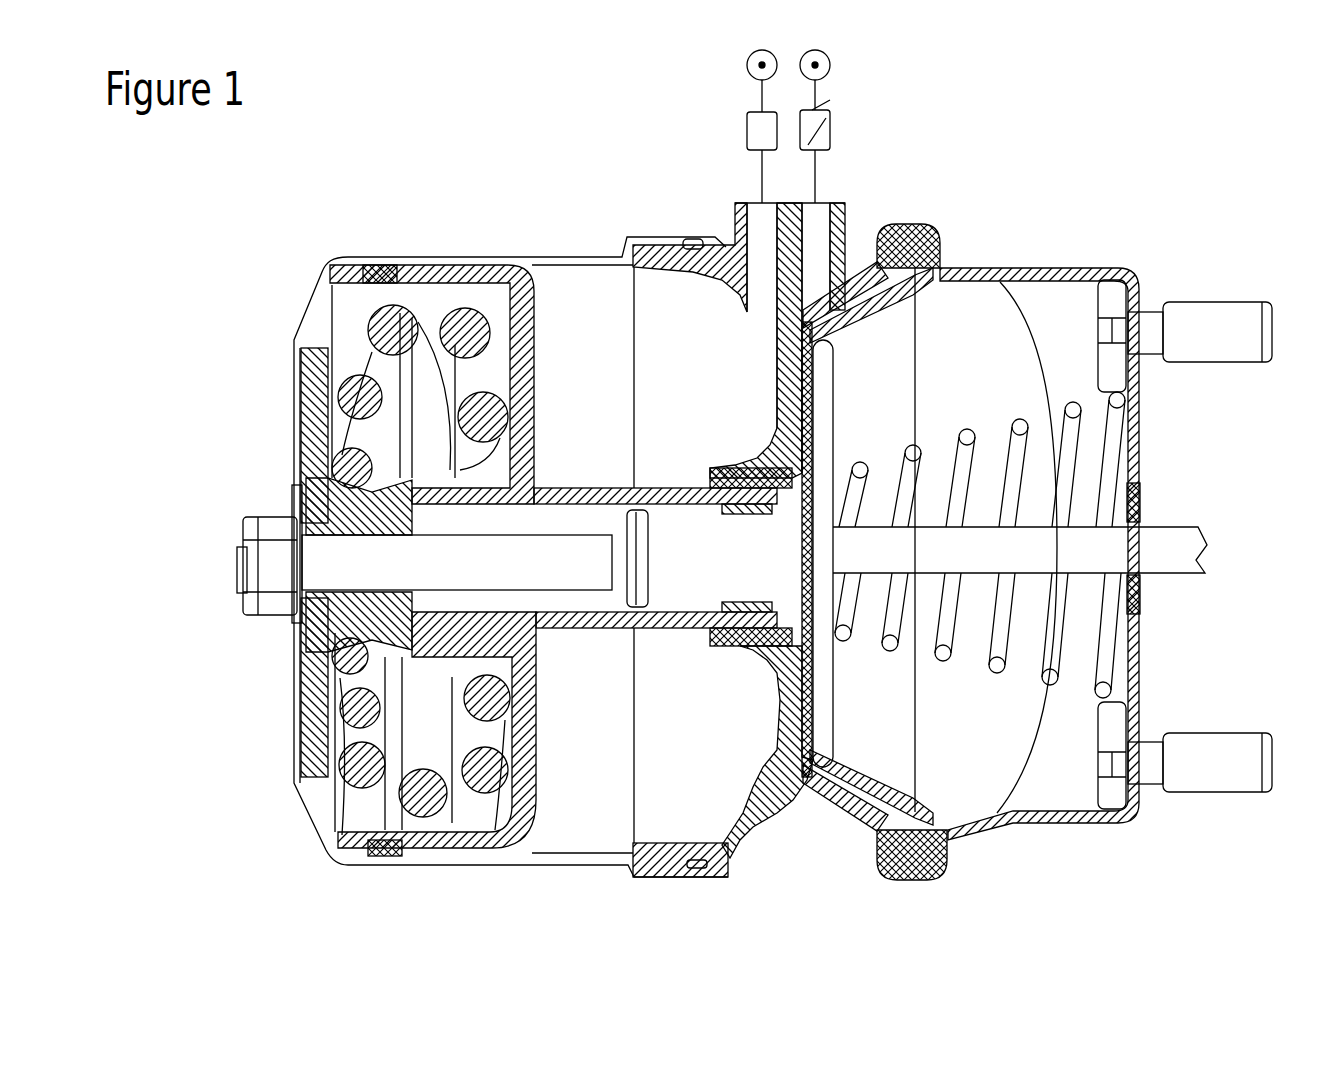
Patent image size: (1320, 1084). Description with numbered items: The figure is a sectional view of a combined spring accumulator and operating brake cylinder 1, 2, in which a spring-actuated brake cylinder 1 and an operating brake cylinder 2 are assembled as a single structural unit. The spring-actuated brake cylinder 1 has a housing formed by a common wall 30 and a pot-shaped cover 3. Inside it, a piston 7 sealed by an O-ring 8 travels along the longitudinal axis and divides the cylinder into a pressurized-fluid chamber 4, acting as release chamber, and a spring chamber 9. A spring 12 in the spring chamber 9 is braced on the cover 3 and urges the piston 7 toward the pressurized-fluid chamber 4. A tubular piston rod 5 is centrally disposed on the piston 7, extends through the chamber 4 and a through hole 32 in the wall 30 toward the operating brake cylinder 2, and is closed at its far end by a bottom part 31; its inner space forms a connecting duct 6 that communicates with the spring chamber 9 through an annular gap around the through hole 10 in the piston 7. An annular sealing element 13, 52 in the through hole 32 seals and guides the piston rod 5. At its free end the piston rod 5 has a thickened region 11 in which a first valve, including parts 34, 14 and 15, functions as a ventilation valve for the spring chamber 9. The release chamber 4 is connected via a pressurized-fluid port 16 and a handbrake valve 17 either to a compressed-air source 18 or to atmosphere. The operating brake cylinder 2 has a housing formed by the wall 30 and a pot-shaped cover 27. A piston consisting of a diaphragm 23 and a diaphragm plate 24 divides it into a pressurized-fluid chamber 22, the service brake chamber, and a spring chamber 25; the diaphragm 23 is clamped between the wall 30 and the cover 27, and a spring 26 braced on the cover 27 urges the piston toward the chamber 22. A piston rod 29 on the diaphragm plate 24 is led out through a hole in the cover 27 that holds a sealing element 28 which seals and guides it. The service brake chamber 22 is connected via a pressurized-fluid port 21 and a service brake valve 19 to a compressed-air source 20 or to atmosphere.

The spring-actuated brake cylinder 1 is at (383, 146).
The operating brake cylinder 2 is at (1087, 193).
The cover 3 is at (602, 850).
The pressurized-fluid chamber 4 is at (578, 840).
The piston rod 5 is at (583, 600).
The connecting duct 6 is at (520, 850).
The piston 7 is at (455, 847).
The O-ring 8 is at (385, 856).
The spring chamber 9 is at (330, 833).
The through hole 10 is at (298, 760).
The thickened region 11 is at (757, 775).
The spring 12 is at (378, 318).
The annular sealing element 13 is at (705, 474).
The first valve component 14 is at (735, 462).
The first valve component 15 is at (752, 452).
The pressurized-fluid port 16 is at (745, 205).
The handbrake valve 17 is at (757, 133).
The compressed-air source 18 is at (746, 66).
The service brake valve 19 is at (832, 122).
The compressed-air source 20 is at (831, 63).
The pressurized-fluid port 21 is at (818, 230).
The pressurized-fluid chamber 22 is at (893, 225).
The diaphragm 23 is at (828, 390).
The diaphragm plate 24 is at (987, 350).
The spring chamber 25 is at (1050, 275).
The spring 26 is at (1084, 435).
The cover 27 is at (1137, 277).
The sealing element 28 is at (1141, 492).
The piston rod 29 is at (1176, 568).
The wall 30 is at (783, 810).
The bottom part 31 is at (953, 847).
The through hole 32 is at (913, 867).
The first valve component 34 is at (462, 263).
The annular sealing element 52 is at (833, 212).